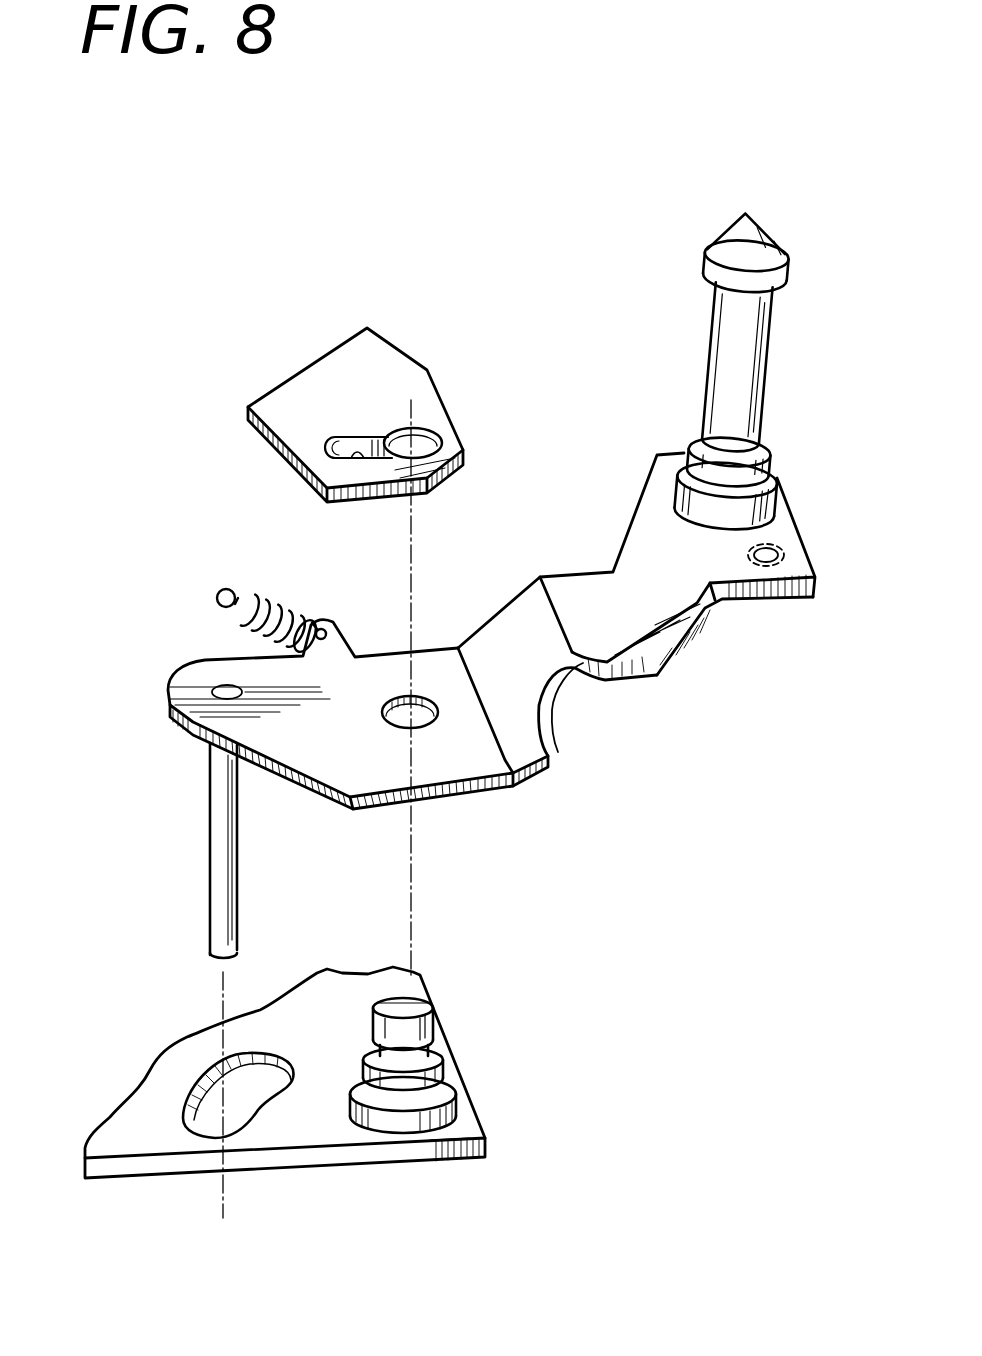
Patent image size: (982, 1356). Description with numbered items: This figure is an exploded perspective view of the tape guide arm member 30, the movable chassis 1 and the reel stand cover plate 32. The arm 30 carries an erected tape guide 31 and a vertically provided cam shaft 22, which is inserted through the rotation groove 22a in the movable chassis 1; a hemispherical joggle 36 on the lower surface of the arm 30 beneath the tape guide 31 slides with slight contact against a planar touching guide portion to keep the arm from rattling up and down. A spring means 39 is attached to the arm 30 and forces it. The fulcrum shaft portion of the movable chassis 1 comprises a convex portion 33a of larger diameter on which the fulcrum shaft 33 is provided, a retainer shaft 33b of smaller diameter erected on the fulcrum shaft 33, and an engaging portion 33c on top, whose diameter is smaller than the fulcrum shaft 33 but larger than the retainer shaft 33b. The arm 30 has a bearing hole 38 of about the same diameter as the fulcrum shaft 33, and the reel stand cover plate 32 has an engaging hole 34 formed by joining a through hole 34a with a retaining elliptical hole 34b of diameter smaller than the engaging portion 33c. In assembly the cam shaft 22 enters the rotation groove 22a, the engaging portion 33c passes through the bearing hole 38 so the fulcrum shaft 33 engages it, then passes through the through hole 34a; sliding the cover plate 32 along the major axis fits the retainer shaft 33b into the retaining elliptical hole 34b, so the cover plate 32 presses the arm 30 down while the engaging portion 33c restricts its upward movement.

The movable chassis 1 is at (317, 1137).
The cam shaft 22 is at (220, 872).
The rotation groove 22a is at (205, 1122).
The tape guide arm member 30 is at (657, 625).
The tape guide 31 is at (770, 352).
The reel stand cover plate 32 is at (387, 363).
The fulcrum shaft 33 is at (447, 1085).
The convex portion 33a is at (450, 1155).
The retainer shaft 33b is at (433, 1067).
The engaging portion 33c is at (413, 1007).
The engaging hole 34 is at (343, 447).
The through hole 34a is at (430, 447).
The retaining elliptical hole 34b is at (357, 450).
The hemispherical joggle 36 is at (766, 560).
The bearing hole 38 is at (440, 703).
The spring means 39 is at (270, 598).